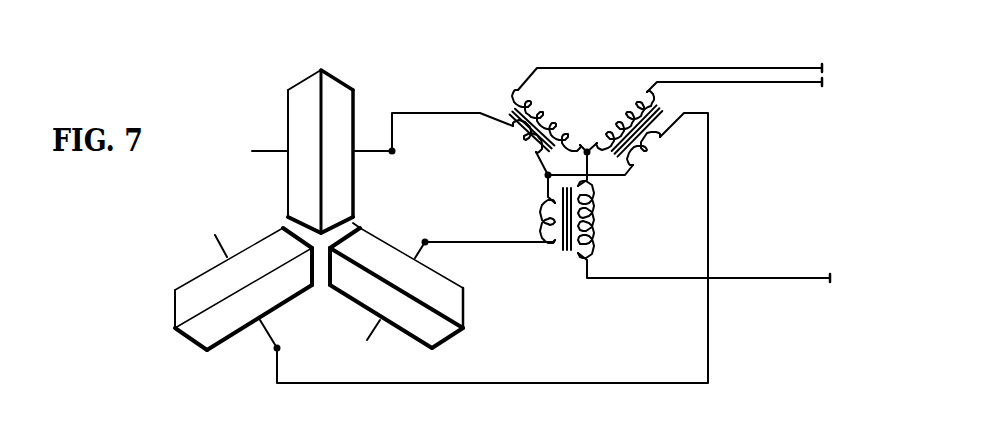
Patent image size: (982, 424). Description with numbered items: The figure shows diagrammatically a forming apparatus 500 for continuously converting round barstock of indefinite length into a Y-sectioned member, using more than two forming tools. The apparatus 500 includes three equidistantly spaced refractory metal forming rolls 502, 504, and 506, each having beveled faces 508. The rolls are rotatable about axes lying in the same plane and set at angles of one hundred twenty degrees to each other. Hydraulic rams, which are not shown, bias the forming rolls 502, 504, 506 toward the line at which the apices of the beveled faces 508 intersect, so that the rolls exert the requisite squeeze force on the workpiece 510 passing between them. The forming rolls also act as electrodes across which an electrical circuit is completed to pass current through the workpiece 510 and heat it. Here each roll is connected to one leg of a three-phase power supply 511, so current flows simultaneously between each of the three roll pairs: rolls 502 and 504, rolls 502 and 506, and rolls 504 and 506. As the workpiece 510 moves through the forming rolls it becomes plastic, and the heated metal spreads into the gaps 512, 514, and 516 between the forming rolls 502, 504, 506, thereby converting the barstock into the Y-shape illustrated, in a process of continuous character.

The forming apparatus 500 is at (246, 109).
The forming roll 502 is at (202, 273).
The forming roll 504 is at (420, 342).
The forming roll 506 is at (353, 90).
The beveled faces 508 is at (337, 78).
The workpiece 510 is at (288, 220).
The three-phase power supply 511 is at (624, 53).
The gap 512 is at (321, 280).
The gap 514 is at (357, 227).
The gap 516 is at (283, 226).